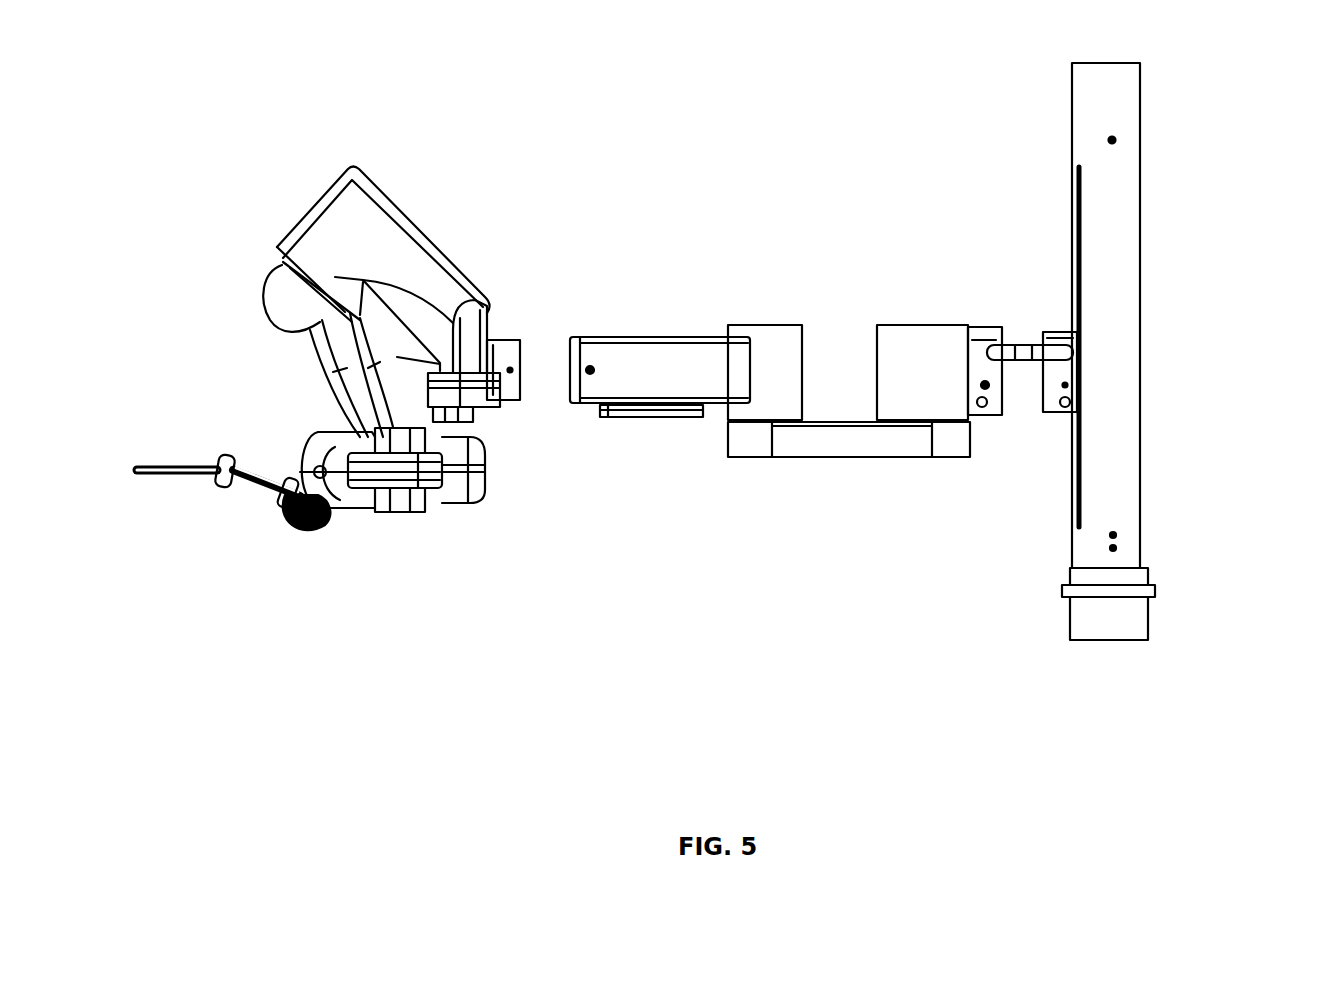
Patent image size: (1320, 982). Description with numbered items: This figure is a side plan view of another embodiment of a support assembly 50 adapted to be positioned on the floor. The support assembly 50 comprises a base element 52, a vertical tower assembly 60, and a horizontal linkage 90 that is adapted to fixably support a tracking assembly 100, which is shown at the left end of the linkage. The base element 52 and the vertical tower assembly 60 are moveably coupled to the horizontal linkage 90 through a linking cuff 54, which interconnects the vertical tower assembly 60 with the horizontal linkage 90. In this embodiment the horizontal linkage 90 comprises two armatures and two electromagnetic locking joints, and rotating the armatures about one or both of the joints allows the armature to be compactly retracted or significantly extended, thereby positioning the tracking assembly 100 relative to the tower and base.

The support assembly 50 is at (935, 430).
The base element 52 is at (1158, 610).
The linking cuff 54 is at (1025, 342).
The vertical tower assembly 60 is at (1052, 131).
The horizontal linkage 90 is at (770, 480).
The tracking assembly 100 is at (373, 533).